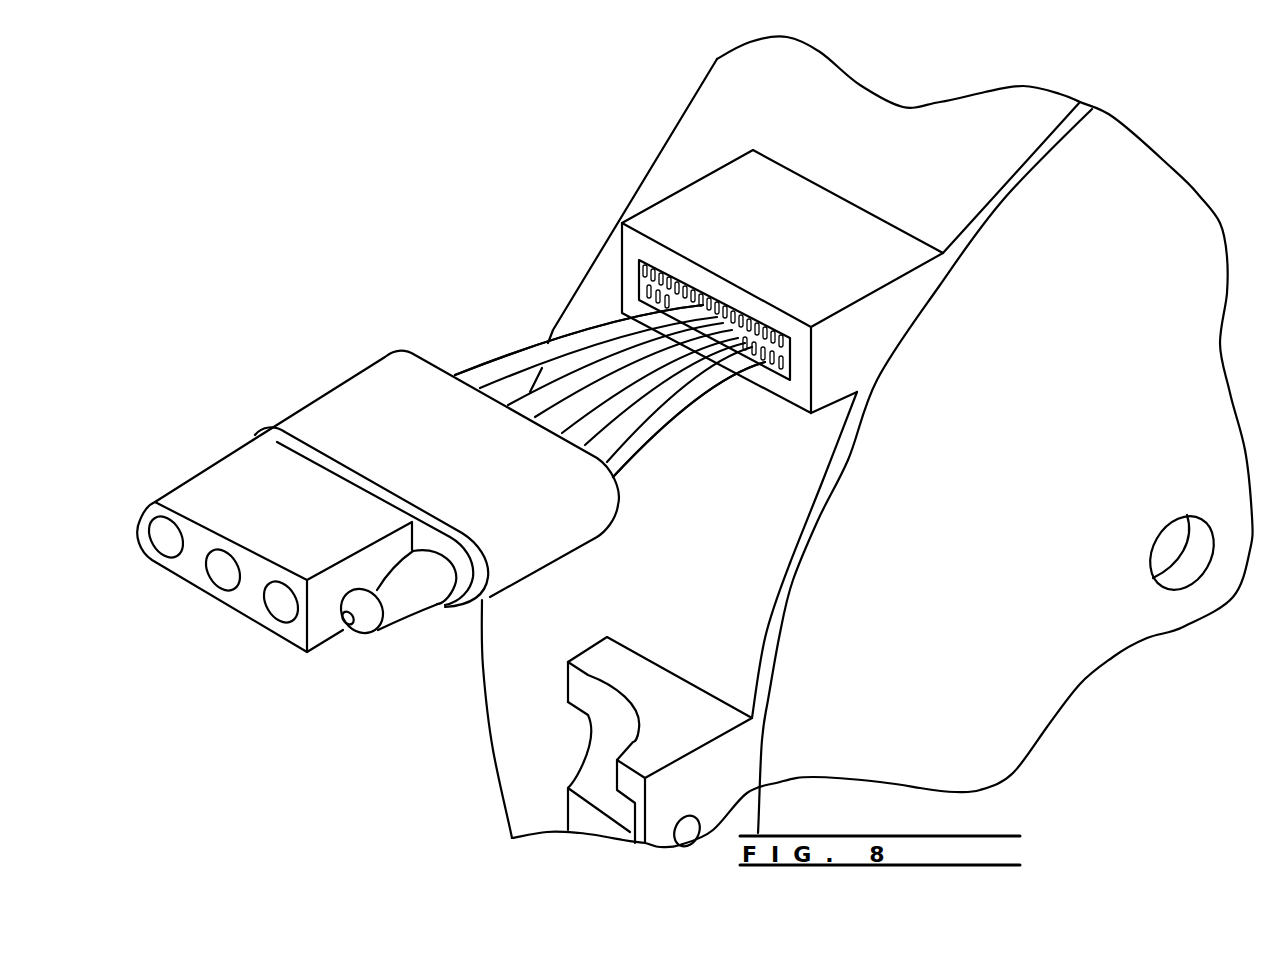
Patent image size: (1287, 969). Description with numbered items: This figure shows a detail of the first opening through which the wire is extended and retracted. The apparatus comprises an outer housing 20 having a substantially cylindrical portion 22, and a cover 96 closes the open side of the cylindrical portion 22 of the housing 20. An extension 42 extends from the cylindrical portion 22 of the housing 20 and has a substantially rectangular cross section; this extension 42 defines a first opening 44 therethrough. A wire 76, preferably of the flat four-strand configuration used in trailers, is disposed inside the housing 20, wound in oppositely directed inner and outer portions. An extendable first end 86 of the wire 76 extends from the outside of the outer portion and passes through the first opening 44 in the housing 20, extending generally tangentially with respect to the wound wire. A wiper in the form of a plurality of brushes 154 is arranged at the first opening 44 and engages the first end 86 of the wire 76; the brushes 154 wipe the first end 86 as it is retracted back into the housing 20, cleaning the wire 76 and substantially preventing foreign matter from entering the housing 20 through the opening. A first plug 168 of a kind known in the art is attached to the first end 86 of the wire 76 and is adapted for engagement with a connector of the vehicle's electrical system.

The outer housing 20 is at (735, 109).
The cylindrical portion 22 is at (688, 138).
The extension 42 is at (667, 217).
The first opening 44 is at (655, 275).
The brushes 154 is at (655, 305).
The extendable first end 86 is at (523, 360).
The wire 76 is at (610, 391).
The first plug 168 is at (332, 423).
The cover 96 is at (1043, 683).